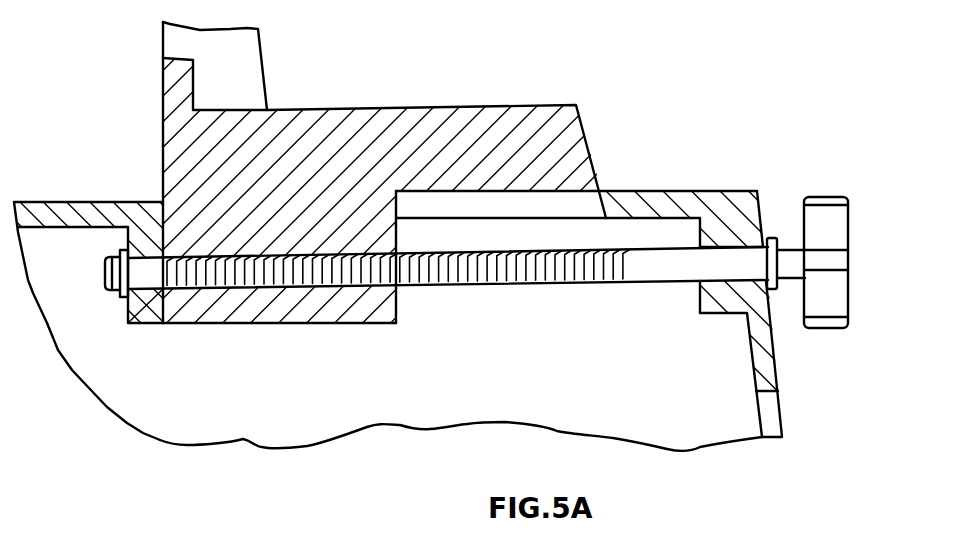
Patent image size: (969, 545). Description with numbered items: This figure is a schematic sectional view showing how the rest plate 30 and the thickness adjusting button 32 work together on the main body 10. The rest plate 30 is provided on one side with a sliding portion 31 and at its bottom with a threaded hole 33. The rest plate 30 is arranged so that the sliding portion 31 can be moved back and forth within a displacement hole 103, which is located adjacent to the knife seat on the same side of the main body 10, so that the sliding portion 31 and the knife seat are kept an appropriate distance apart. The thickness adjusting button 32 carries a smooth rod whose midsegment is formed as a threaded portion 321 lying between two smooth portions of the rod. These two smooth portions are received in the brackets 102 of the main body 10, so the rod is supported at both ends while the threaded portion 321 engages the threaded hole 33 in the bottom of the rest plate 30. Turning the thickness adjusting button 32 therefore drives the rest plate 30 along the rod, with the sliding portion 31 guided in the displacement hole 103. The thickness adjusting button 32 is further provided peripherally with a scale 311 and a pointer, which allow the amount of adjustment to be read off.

The main body 10 is at (701, 201).
The brackets 102 is at (147, 323).
The displacement hole 103 is at (568, 203).
The rest plate 30 is at (227, 73).
The sliding portion 31 is at (472, 125).
The thickness adjusting button 32 is at (823, 217).
The threaded hole 33 is at (300, 322).
The scale 311 is at (770, 292).
The threaded portion 321 is at (490, 288).